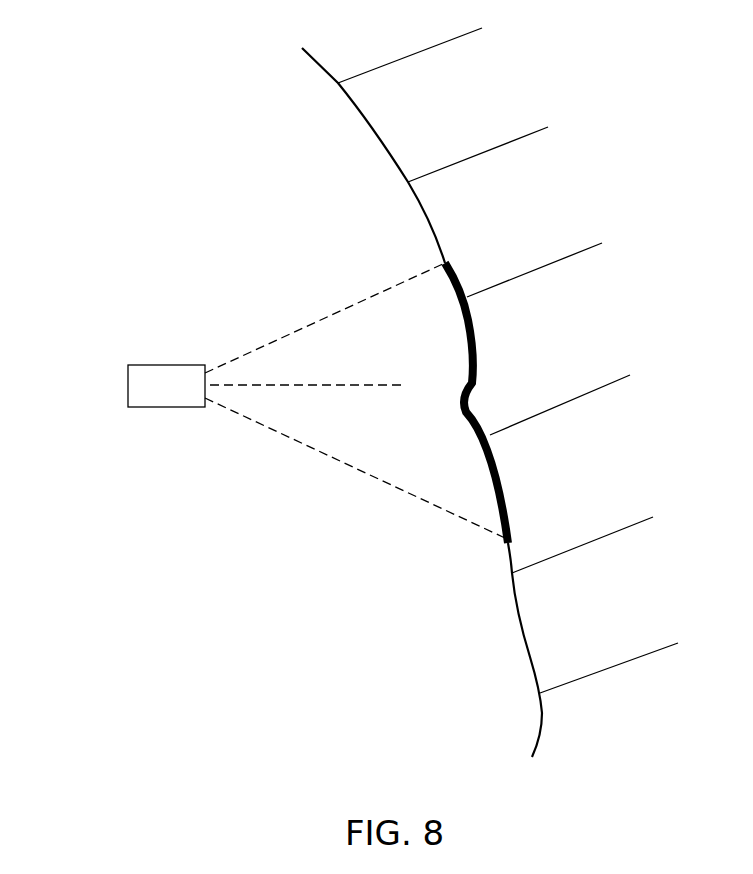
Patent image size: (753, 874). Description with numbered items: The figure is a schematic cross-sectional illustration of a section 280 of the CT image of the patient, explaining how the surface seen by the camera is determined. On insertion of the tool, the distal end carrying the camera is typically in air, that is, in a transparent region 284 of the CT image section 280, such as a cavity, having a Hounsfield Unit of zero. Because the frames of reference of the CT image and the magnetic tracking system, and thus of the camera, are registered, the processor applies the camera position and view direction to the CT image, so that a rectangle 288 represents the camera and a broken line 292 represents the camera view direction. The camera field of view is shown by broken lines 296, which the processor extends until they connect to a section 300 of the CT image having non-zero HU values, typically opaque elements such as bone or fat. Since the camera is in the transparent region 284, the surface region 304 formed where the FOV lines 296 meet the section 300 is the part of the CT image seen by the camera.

The section of the CT image 280 is at (125, 622).
The transparent region 284 is at (253, 565).
The rectangle 288 is at (170, 365).
The broken line 292 is at (323, 388).
The broken lines 296 is at (338, 312).
The section of the CT image having non-zero HU values 300 is at (560, 339).
The surface region 304 is at (463, 385).